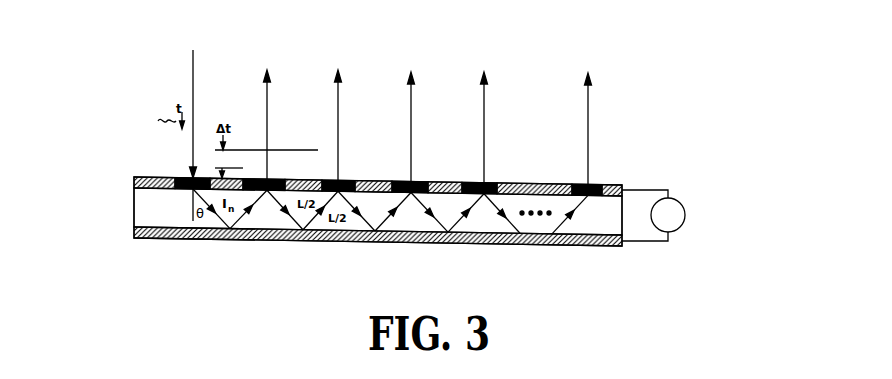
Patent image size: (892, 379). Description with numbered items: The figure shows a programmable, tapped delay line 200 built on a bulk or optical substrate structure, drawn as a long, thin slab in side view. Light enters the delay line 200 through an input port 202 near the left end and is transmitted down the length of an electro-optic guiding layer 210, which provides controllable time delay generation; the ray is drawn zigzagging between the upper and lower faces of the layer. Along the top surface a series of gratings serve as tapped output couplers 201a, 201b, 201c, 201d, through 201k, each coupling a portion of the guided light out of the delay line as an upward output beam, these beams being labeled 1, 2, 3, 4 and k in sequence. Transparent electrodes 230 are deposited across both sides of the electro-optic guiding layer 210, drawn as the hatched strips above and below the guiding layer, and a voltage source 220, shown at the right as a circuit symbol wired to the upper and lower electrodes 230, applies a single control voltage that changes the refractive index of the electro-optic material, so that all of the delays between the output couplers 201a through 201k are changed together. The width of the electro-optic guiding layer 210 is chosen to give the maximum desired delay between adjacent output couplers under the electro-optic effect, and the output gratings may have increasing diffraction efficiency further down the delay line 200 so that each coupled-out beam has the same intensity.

The programmable tapped delay line 200 is at (110, 154).
The input port 202 is at (187, 176).
The electro-optic guiding layer 210 is at (147, 203).
The voltage source 220 is at (686, 208).
The electrodes 230 is at (612, 184).
The tapped output coupler 201a is at (274, 178).
The tapped output coupler 201b is at (345, 178).
The tapped output coupler 201c is at (416, 178).
The tapped output coupler 201d is at (489, 178).
The tapped output coupler 201k is at (575, 184).
The first output light beam 1 is at (265, 168).
The second output light beam 2 is at (337, 152).
The third output light beam 3 is at (410, 135).
The fourth output light beam 4 is at (483, 121).
The k-th output light beam k is at (585, 108).